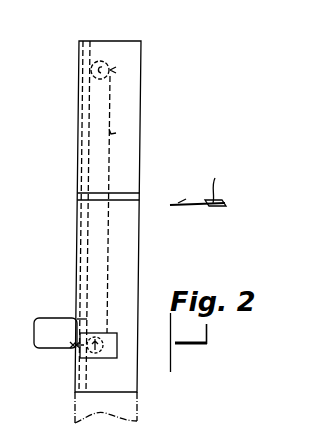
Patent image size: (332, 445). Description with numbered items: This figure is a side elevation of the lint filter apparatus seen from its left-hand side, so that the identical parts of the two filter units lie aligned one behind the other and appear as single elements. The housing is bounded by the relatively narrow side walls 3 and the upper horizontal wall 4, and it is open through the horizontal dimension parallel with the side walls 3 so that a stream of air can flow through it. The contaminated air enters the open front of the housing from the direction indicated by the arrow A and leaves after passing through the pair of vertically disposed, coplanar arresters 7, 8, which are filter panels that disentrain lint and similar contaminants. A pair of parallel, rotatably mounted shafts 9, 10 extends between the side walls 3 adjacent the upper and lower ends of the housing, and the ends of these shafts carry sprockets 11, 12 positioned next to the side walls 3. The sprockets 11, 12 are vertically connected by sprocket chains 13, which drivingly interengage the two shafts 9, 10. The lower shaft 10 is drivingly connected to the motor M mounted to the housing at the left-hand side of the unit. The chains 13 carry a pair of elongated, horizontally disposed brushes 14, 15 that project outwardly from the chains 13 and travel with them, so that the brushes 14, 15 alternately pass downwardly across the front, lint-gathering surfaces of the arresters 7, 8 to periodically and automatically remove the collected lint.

The side wall 3 is at (125, 152).
The upper horizontal wall 4 is at (112, 41).
The arrester 7 is at (79, 142).
The arrester 8 is at (76, 285).
The upper shaft 9 is at (107, 64).
The lower shaft 10 is at (95, 358).
The sprocket 11 is at (98, 61).
The sprocket 12 is at (100, 358).
The sprocket chain 13 is at (111, 133).
The brush 14 is at (73, 348).
The brush 15 is at (110, 70).
The motor M is at (44, 318).
The arrow indicating air flow direction A is at (199, 183).